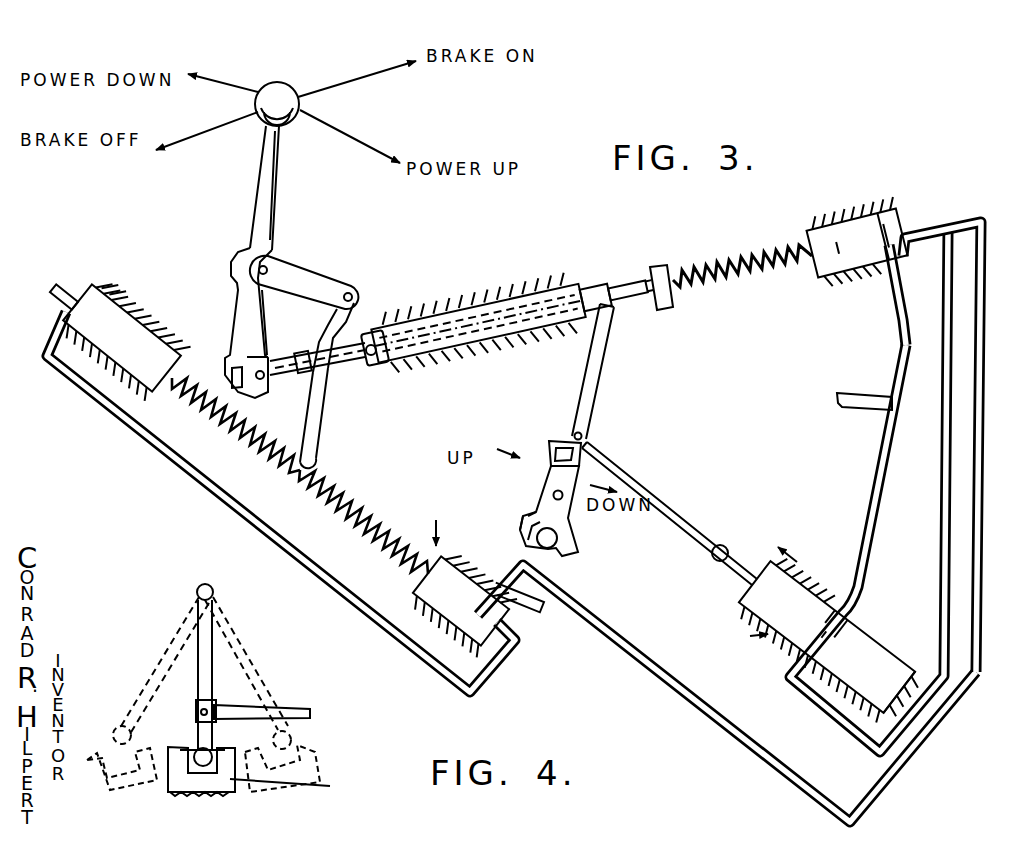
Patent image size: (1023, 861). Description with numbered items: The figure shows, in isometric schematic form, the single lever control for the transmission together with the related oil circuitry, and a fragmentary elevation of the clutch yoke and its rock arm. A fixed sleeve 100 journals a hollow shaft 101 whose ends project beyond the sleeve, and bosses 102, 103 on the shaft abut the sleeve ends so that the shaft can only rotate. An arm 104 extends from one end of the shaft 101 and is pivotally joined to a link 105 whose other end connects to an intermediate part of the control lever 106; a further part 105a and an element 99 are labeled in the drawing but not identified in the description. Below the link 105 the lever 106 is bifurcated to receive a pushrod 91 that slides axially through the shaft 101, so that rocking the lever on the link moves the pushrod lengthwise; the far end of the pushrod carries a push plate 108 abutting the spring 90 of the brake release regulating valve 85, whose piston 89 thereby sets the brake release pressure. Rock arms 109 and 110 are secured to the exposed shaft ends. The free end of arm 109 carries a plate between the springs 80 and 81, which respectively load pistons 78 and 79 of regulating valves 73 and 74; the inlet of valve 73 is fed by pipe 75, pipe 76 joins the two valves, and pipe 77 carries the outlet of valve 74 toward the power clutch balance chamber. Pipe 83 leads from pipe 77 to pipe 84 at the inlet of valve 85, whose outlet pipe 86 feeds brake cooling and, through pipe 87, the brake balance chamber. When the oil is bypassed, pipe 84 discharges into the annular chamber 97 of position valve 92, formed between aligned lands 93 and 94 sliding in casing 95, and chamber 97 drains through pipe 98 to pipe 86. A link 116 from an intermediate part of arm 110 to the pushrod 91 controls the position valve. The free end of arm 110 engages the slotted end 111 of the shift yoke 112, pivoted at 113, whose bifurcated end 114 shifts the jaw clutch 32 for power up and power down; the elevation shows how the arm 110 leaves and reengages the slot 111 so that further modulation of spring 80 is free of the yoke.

In FIG. 3, the jaw clutch 32 is at (551, 548).
In FIG. 3, the regulating valve 73 is at (140, 300).
In FIG. 3, the regulating valve 74 is at (435, 521).
In FIG. 3, the pipe 75 is at (62, 286).
In FIG. 3, the pipe 76 is at (226, 502).
In FIG. 3, the pipe 77 is at (538, 612).
In FIG. 3, the piston 78 is at (118, 348).
In FIG. 3, the piston 79 is at (471, 612).
In FIG. 3, the spring 80 is at (204, 402).
In FIG. 3, the spring 81 is at (352, 528).
In FIG. 3, the pipe 83 is at (628, 646).
In FIG. 3, the pipe 84 is at (922, 242).
In FIG. 3, the brake release regulating valve 85 is at (855, 228).
In FIG. 3, the pipe 86 is at (896, 308).
In FIG. 3, the pipe 87 is at (857, 400).
In FIG. 3, the piston 89 is at (862, 245).
In FIG. 3, the spring 90 is at (731, 266).
In FIG. 3, the pushrod 91 is at (645, 305).
In FIG. 3, the position valve 92 is at (744, 635).
In FIG. 3, the land 93 is at (861, 677).
In FIG. 3, the land 94 is at (806, 615).
In FIG. 3, the casing 95 is at (890, 660).
In FIG. 3, the annular chamber 97 is at (812, 655).
In FIG. 3, the pipe 98 is at (875, 556).
In FIG. 3, the ball joint 99 is at (716, 562).
In FIG. 3, the fixed sleeve 100 is at (490, 294).
In FIG. 3, the hollow shaft 101 is at (352, 375).
In FIG. 4, the hollow shaft 101 is at (212, 584).
In FIG. 3, the boss 102 is at (388, 360).
In FIG. 3, the boss 103 is at (590, 294).
In FIG. 3, the arm 104 is at (355, 322).
In FIG. 3, the link 105 is at (229, 322).
In FIG. 3, the link 105a is at (312, 270).
In FIG. 3, the control lever 106 is at (259, 173).
In FIG. 3, the push plate 108 is at (676, 300).
In FIG. 3, the rock arm 109 is at (330, 444).
In FIG. 3, the rock arm 110 is at (602, 390).
In FIG. 4, the rock arm 110 is at (160, 650).
In FIG. 3, the slotted end 111 is at (548, 458).
In FIG. 4, the slotted end 111 is at (136, 792).
In FIG. 3, the shift yoke 112 is at (548, 466).
In FIG. 4, the shift yoke 112 is at (92, 796).
In FIG. 3, the pivot 113 is at (564, 500).
In FIG. 3, the bifurcated end 114 is at (524, 522).
In FIG. 3, the link 116 is at (648, 482).
In FIG. 4, the link 116 is at (297, 710).